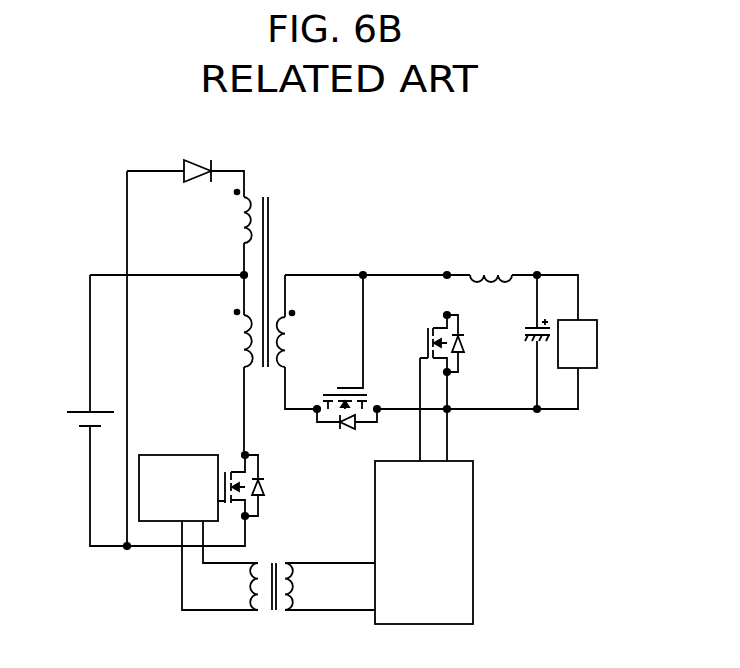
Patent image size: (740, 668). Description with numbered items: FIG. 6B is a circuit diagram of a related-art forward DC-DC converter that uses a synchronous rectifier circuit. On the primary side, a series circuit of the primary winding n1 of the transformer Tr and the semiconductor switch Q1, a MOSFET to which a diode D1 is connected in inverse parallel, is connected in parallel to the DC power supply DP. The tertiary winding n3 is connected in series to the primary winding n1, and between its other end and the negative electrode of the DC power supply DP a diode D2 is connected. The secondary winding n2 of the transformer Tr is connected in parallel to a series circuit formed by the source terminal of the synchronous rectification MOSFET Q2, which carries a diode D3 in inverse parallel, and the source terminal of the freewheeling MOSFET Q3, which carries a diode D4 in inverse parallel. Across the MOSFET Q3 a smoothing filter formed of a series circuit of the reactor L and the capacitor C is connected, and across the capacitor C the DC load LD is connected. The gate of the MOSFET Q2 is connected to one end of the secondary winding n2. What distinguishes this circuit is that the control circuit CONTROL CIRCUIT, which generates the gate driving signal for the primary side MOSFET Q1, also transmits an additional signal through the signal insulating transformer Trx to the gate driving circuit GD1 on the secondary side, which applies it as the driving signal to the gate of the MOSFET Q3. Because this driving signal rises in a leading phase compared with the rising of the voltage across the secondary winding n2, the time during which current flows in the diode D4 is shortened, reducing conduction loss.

The diode D2 is at (197, 156).
The transformer Tr is at (278, 273).
The tertiary winding n3 is at (231, 216).
The primary winding n1 is at (233, 338).
The secondary winding n2 is at (298, 339).
The DC power supply DP is at (81, 405).
The semiconductor switch Q1 is at (226, 474).
The diode D1 is at (272, 485).
The control circuit CONTROL CIRCUIT is at (198, 532).
The signal insulating transformer Trx is at (312, 571).
The gate driving circuit GD1 is at (424, 491).
The synchronous rectification MOSFET Q2 is at (334, 342).
The diode D3 is at (347, 433).
The freewheeling MOSFET Q3 is at (422, 343).
The freewheeling diode D4 is at (471, 345).
The reactor L is at (491, 257).
The capacitor C is at (530, 324).
The DC load LD is at (592, 339).